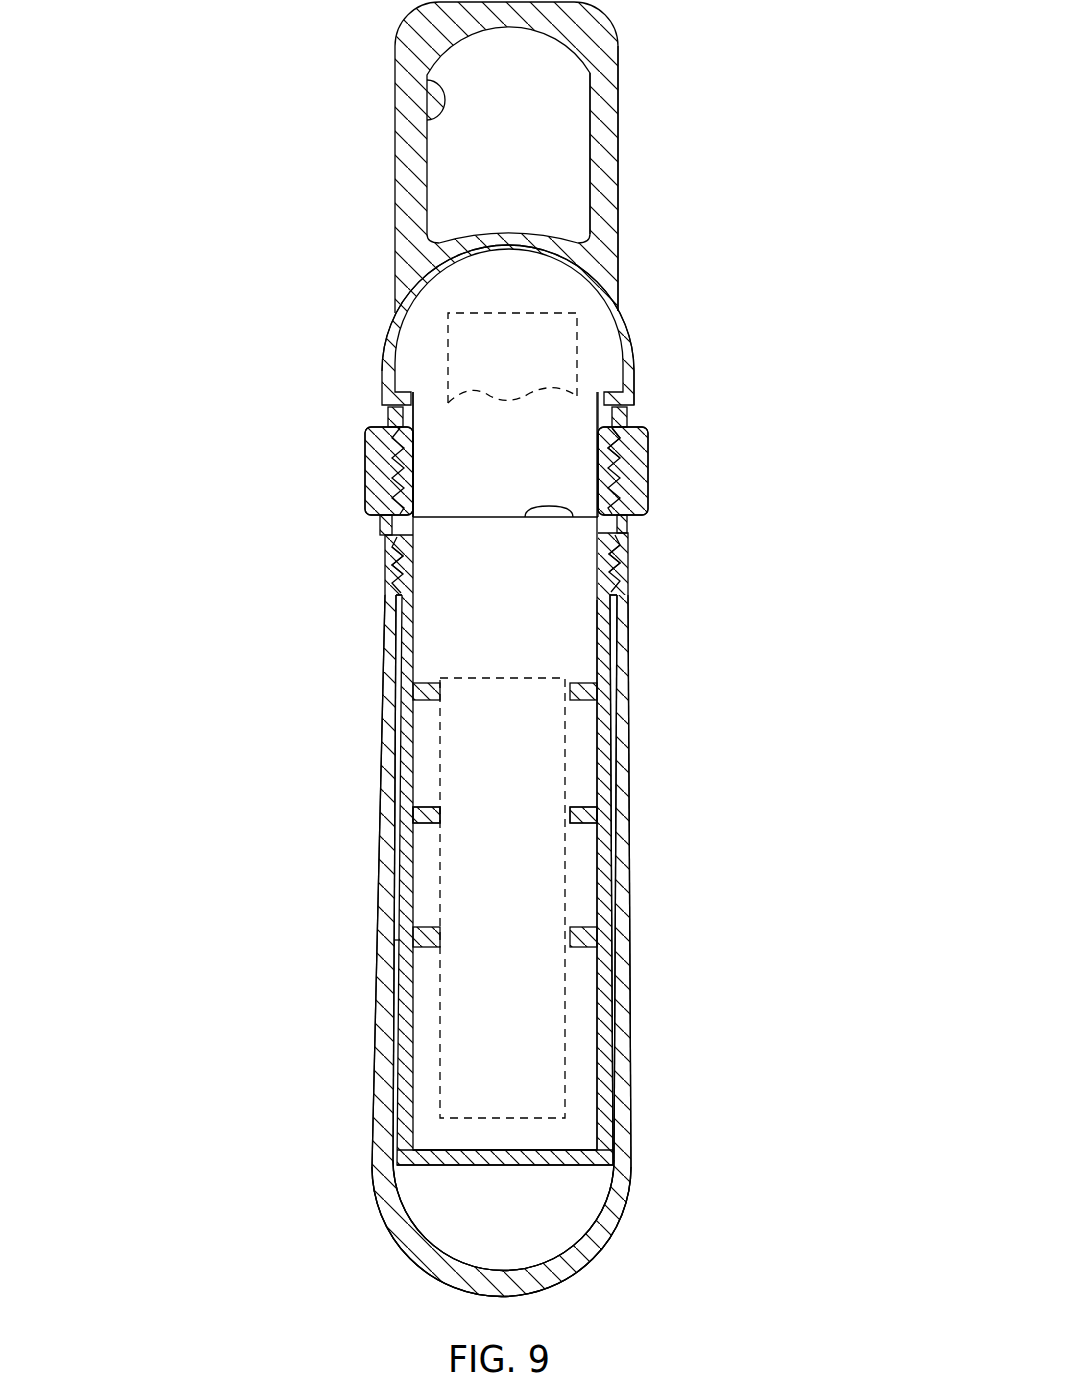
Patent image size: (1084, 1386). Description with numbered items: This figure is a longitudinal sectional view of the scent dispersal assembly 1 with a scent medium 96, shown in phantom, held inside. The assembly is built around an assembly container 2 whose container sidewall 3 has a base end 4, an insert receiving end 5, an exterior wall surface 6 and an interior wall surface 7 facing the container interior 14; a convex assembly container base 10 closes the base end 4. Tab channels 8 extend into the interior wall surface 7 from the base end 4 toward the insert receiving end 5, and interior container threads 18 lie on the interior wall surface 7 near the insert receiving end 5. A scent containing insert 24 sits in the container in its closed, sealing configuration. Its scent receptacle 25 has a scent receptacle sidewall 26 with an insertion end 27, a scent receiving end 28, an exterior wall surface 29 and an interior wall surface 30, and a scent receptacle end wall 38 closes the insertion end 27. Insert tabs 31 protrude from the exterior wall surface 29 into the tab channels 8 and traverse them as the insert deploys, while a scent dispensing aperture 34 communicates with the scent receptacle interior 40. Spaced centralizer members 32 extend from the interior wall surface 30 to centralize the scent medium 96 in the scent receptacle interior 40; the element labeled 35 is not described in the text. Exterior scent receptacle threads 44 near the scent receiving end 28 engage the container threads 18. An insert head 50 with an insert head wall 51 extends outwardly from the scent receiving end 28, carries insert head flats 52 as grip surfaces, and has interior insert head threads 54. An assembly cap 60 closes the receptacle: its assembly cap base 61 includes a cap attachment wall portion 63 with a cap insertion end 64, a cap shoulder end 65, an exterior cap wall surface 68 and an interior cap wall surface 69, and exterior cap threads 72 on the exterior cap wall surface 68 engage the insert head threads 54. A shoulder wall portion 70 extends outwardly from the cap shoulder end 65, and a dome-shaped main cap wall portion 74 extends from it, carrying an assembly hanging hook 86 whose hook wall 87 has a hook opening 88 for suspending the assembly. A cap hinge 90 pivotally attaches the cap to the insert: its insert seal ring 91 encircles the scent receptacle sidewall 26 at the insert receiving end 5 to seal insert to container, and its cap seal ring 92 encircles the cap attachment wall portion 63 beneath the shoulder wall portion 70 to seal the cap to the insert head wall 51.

The scent dispersal assembly 1 is at (205, 56).
The assembly container 2 is at (381, 735).
The container sidewall 3 is at (380, 862).
The base end 4 is at (404, 1158).
The insert receiving end 5 is at (417, 525).
The exterior wall surface 6 is at (383, 690).
The interior wall surface 7 is at (398, 650).
The tab channel 8 is at (391, 1003).
The assembly container base 10 is at (445, 1265).
The container interior 14 is at (439, 1196).
The interior container threads 18 is at (417, 567).
The scent containing insert 24 is at (348, 433).
The scent receptacle 25 is at (380, 950).
The scent receptacle sidewall 26 is at (620, 900).
The insertion end 27 is at (629, 1168).
The scent receiving end 28 is at (570, 517).
The exterior wall surface 29 is at (615, 716).
The interior wall surface 30 is at (612, 632).
The insert tab 31 is at (400, 1152).
The centralizer member 32 is at (588, 810).
The scent dispensing aperture 34 is at (380, 830).
The rib 35 is at (600, 814).
The scent receptacle end wall 38 is at (553, 1165).
The scent receptacle interior 40 is at (586, 673).
The exterior scent receptacle threads 44 is at (627, 567).
The insert head 50 is at (662, 490).
The insert head wall 51 is at (650, 460).
The insert head flats 52 is at (374, 512).
The interior insert head threads 54 is at (410, 443).
The assembly cap 60 is at (364, 182).
The assembly cap base 61 is at (641, 305).
The cap attachment wall portion 63 is at (410, 460).
The cap insertion end 64 is at (547, 517).
The cap shoulder end 65 is at (630, 376).
The exterior cap wall surface 68 is at (648, 440).
The interior cap wall surface 69 is at (598, 487).
The shoulder wall portion 70 is at (393, 405).
The exterior cap threads 72 is at (386, 472).
The main cap wall portion 74 is at (634, 345).
The assembly hanging hook 86 is at (630, 151).
The hook wall 87 is at (618, 105).
The hook opening 88 is at (432, 100).
The cap hinge 90 is at (378, 544).
The insert seal ring 91 is at (632, 526).
The cap seal ring 92 is at (628, 417).
The scent medium 96 is at (531, 336).